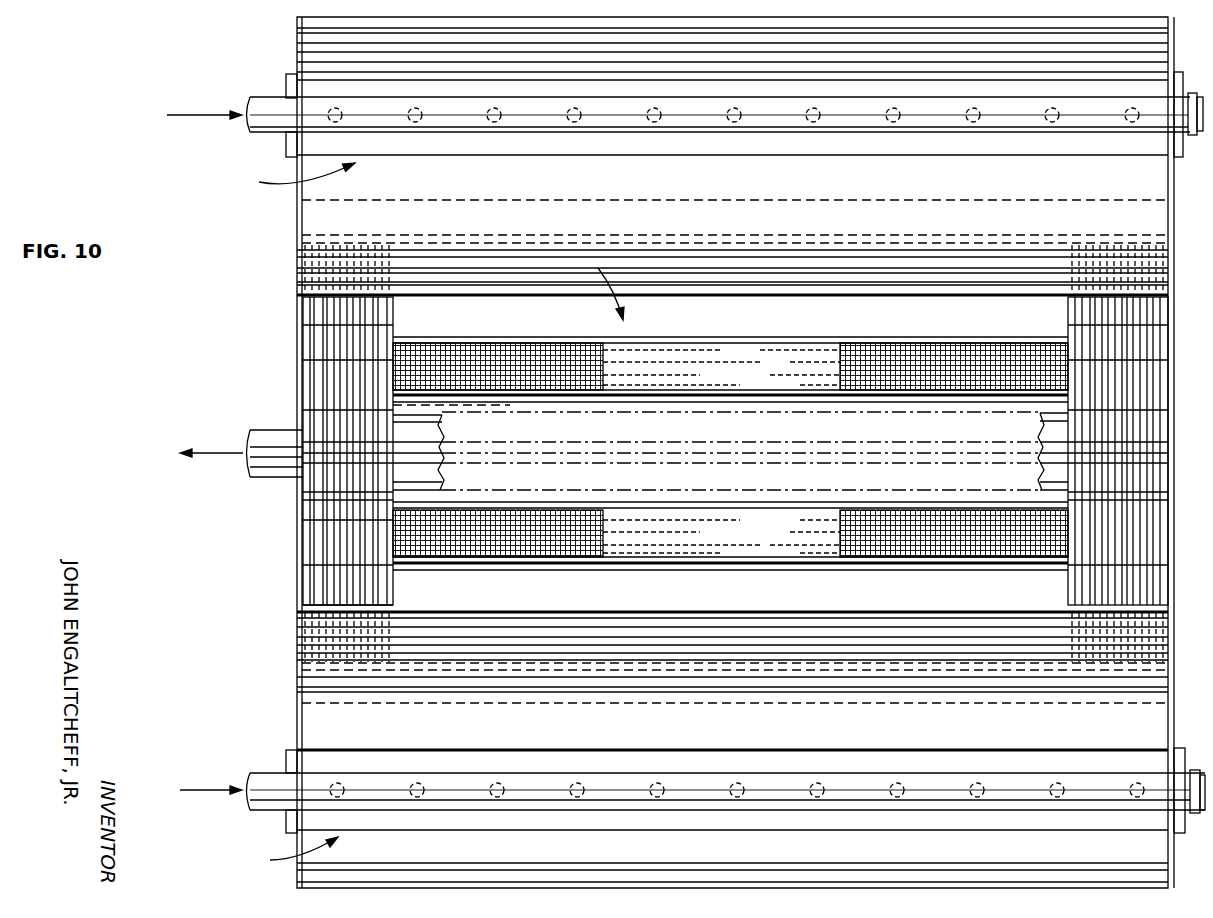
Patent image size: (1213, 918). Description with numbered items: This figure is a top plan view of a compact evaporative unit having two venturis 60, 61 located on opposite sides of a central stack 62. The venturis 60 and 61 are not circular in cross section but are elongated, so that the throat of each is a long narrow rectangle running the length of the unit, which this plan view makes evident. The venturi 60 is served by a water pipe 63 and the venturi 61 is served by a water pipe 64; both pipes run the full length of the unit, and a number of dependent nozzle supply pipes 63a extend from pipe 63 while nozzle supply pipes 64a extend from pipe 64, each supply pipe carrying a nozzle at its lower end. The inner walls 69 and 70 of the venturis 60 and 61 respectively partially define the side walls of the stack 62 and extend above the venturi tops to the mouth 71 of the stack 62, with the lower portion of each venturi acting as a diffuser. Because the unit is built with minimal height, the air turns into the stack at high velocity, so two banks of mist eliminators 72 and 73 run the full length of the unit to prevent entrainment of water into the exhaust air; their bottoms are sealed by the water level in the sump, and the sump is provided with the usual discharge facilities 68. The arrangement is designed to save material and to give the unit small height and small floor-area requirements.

The venturi 60 is at (261, 153).
The venturi 61 is at (259, 830).
The central stack 62 is at (597, 288).
The water pipe 63 is at (270, 105).
The nozzle supply pipes 63a is at (808, 120).
The water pipe 64 is at (282, 780).
The nozzle supply pipes 64a is at (815, 783).
The discharge facilities 68 is at (282, 440).
The inner wall 69 is at (368, 188).
The inner wall 70 is at (343, 733).
The mouth 71 is at (805, 310).
The mist eliminators 72 is at (325, 320).
The mist eliminators 73 is at (327, 547).